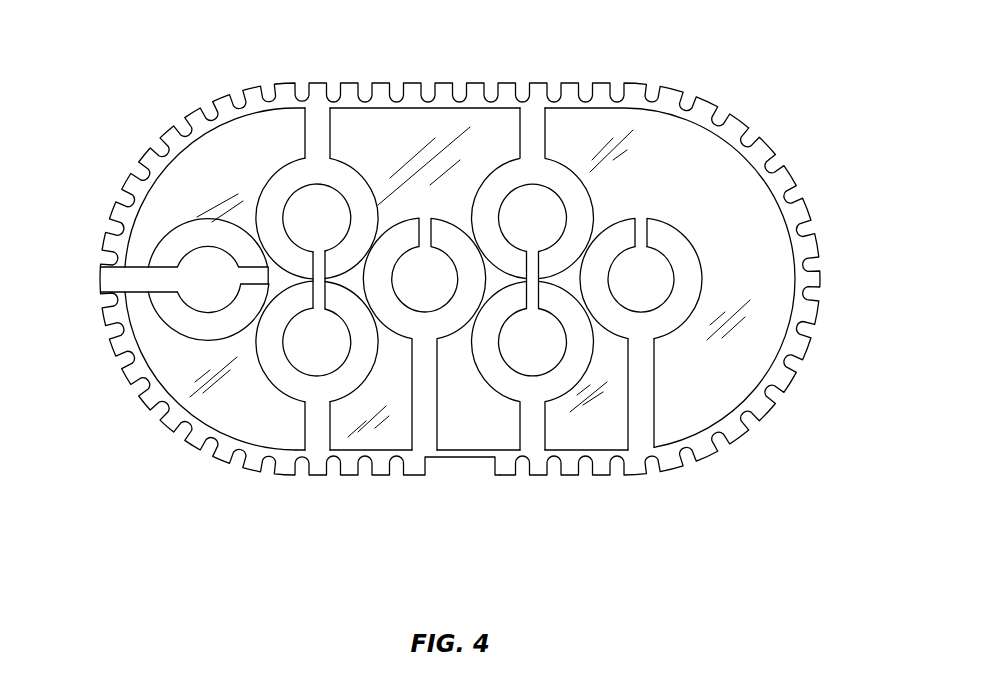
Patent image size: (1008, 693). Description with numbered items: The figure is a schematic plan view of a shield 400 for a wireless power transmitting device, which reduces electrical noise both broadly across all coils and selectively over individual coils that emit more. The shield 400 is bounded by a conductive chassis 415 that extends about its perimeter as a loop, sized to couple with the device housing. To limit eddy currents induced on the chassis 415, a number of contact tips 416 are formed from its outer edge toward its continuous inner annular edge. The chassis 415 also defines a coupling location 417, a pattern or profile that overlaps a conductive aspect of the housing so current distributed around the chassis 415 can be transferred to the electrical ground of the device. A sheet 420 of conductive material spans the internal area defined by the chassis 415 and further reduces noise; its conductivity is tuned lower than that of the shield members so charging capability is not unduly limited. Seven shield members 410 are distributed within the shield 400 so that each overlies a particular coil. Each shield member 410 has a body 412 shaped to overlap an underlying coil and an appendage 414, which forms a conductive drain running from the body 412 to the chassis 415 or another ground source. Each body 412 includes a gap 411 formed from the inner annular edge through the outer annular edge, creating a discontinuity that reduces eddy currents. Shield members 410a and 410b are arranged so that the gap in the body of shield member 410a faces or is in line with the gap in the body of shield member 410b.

The shield 400 is at (118, 66).
The shield member 410 is at (694, 242).
The shield member 410a is at (330, 123).
The shield member 410b is at (315, 432).
The gap 411 is at (264, 272).
The body 412 is at (702, 270).
The appendage 414 is at (656, 398).
The chassis 415 is at (738, 125).
The contact tips 416 is at (258, 98).
The coupling location 417 is at (465, 452).
The sheet 420 is at (601, 118).